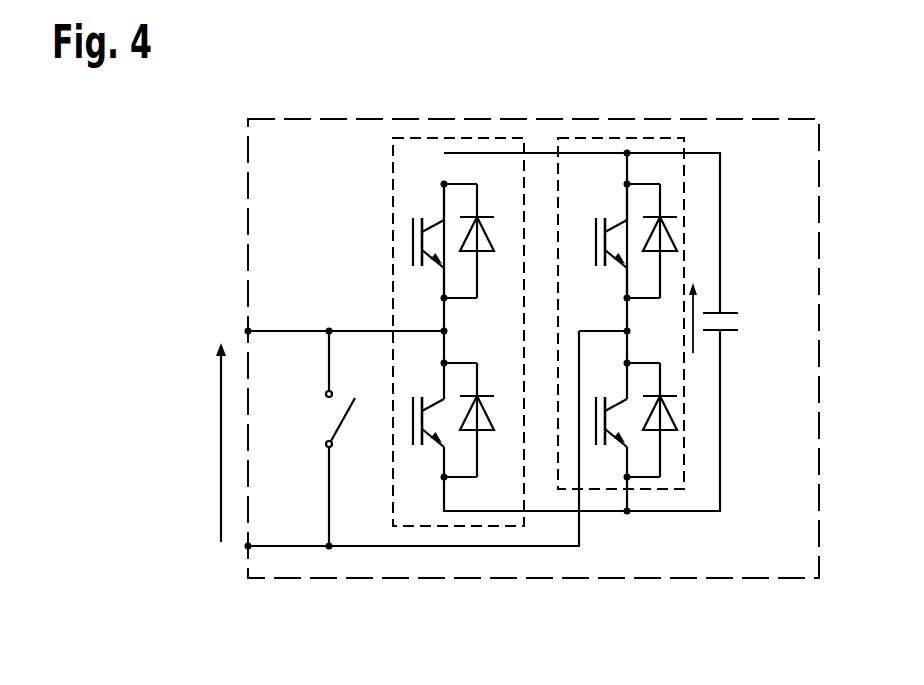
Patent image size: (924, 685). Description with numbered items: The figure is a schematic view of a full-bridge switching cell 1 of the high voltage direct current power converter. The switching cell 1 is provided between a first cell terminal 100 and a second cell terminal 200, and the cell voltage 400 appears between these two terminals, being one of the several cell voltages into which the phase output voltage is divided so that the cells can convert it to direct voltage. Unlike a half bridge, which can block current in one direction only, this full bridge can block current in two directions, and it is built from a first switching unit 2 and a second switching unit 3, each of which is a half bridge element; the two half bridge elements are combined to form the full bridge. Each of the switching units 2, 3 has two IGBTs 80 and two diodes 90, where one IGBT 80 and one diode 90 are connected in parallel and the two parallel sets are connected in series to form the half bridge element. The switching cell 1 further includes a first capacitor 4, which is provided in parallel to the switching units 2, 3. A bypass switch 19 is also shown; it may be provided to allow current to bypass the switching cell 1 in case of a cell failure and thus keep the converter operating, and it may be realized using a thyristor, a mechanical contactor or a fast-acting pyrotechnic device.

The switching cell 1 is at (185, 110).
The first switching unit 2 is at (415, 137).
The second switching unit 3 is at (684, 195).
The first capacitor 4 is at (744, 296).
The bypass switch 19 is at (320, 403).
The IGBT 80 is at (440, 232).
The diode 90 is at (487, 240).
The first cell terminal 100 is at (248, 331).
The second cell terminal 200 is at (248, 546).
The cell voltage 400 is at (221, 441).